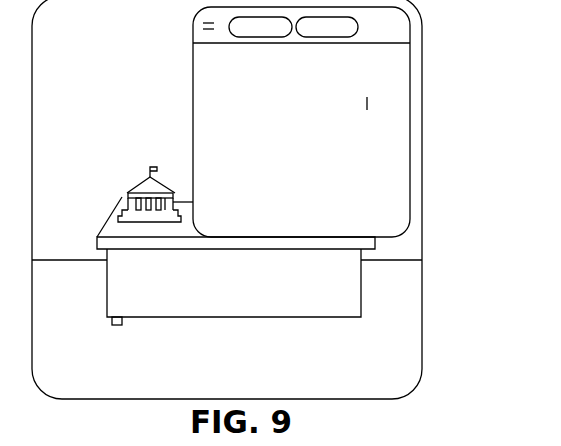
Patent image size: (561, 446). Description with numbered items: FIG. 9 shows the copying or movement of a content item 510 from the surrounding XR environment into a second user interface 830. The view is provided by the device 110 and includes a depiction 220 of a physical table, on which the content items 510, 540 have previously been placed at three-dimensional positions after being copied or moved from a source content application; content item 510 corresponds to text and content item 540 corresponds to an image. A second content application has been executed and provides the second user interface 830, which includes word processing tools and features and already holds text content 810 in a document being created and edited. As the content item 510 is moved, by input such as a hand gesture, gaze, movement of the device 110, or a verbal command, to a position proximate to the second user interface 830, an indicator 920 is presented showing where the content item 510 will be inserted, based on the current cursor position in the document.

The device 110 is at (93, 32).
The depiction of table 220 is at (126, 322).
The content item 540 is at (126, 190).
The content item 510 is at (133, 113).
The second user interface 830 is at (193, 18).
The text content 810 is at (220, 73).
The indicator 920 is at (368, 108).